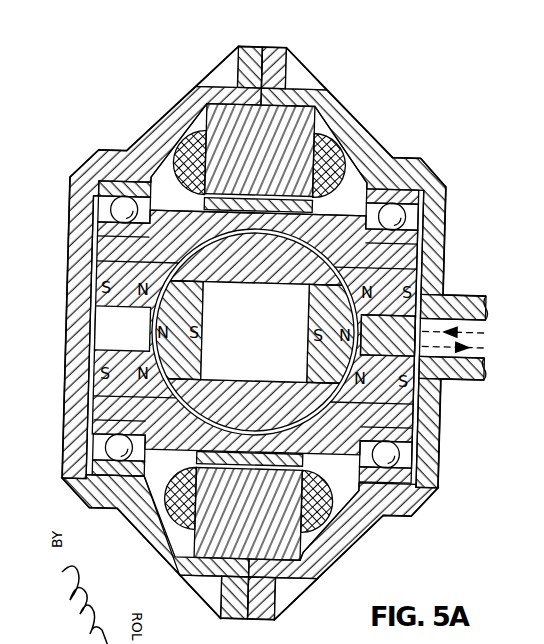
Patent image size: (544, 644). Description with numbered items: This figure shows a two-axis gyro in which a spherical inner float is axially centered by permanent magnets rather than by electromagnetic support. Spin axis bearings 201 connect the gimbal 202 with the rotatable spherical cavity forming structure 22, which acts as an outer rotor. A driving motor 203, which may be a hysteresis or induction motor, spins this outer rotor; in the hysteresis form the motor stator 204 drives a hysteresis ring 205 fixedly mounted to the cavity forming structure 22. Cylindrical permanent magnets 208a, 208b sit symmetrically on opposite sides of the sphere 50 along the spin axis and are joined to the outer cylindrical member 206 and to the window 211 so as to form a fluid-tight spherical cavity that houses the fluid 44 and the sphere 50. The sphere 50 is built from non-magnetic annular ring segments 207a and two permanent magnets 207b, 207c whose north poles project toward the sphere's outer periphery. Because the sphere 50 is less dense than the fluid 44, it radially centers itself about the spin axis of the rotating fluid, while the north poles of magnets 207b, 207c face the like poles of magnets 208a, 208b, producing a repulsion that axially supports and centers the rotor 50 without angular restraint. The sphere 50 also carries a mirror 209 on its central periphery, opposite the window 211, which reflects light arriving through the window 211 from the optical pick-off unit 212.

The spherical cavity forming structure 22 is at (163, 217).
The fluid 44 is at (203, 398).
The sphere 50 is at (233, 264).
The spin axis bearings 201 is at (122, 208).
The gimbal 202 is at (350, 112).
The driving motor 203 is at (240, 122).
The motor stator 204 is at (303, 108).
The hysteresis ring 205 is at (314, 208).
The outer cylindrical member 206 is at (204, 206).
The non-magnetic annular ring segments 207a is at (284, 268).
The permanent magnet 207b is at (328, 370).
The permanent magnet 207c is at (186, 356).
The cylindrical permanent magnet 208a is at (136, 329).
The cylindrical permanent magnet 208b is at (388, 280).
The mirror 209 is at (330, 348).
The window 211 is at (438, 387).
The optical pick-off unit 212 is at (488, 308).